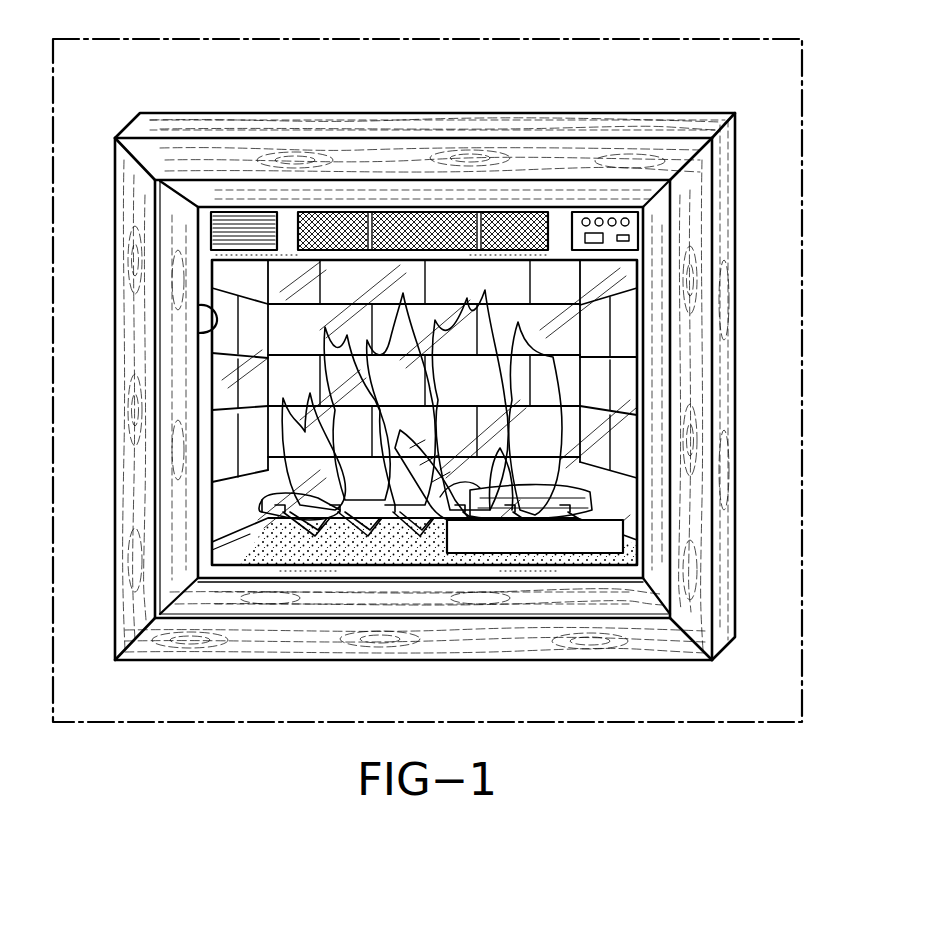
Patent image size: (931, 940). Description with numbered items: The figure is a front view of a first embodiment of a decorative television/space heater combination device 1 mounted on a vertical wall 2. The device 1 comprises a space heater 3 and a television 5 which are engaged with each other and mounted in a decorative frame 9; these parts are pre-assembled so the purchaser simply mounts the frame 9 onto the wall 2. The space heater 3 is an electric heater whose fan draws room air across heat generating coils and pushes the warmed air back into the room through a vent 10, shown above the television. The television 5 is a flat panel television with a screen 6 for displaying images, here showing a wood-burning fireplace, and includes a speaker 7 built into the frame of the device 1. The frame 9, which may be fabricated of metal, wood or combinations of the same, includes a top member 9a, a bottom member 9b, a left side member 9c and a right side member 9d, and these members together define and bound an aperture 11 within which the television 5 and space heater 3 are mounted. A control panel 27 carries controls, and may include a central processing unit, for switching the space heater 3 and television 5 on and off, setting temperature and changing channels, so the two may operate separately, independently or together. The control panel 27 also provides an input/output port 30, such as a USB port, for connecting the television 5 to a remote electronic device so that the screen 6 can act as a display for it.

The television/space heater combination device 1 is at (429, 382).
The wall 2 is at (250, 67).
The space heater 3 is at (424, 160).
The television 5 is at (641, 386).
The screen 6 is at (566, 339).
The speaker 7 is at (242, 222).
The decorative frame 9 is at (431, 394).
The top member 9a is at (297, 147).
The bottom member 9b is at (377, 640).
The left side member 9c is at (127, 463).
The right side member 9d is at (700, 291).
The vent 10 is at (435, 230).
The aperture 11 is at (212, 332).
The control panel 27 is at (660, 160).
The input/output port 30 is at (630, 236).